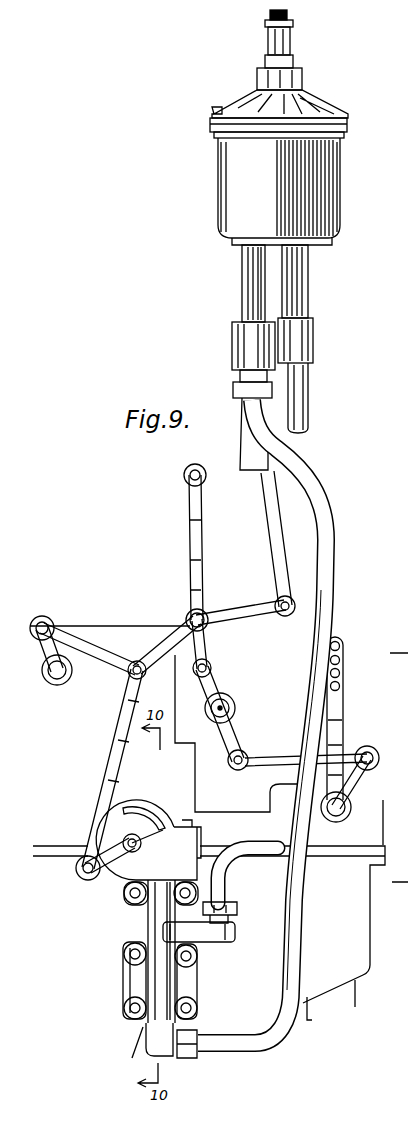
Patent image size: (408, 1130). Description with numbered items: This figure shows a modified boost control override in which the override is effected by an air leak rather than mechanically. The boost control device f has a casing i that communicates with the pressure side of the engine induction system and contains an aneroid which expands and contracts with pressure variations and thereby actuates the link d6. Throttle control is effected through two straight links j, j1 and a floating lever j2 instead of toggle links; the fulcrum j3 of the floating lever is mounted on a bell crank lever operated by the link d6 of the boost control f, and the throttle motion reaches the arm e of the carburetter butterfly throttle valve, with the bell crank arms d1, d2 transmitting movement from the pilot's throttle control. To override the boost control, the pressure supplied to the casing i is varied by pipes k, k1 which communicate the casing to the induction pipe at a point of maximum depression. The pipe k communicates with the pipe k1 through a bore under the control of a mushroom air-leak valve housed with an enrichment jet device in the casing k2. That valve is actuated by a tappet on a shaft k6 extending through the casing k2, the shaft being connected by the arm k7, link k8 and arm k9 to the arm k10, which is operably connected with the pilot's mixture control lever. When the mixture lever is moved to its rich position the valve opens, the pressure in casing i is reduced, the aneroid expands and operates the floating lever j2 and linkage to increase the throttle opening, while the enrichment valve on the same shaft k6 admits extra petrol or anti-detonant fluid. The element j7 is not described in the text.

The casing i is at (235, 178).
The boost control device f is at (239, 254).
The pipe k is at (323, 500).
The pipe k1 is at (262, 860).
The casing k2 is at (153, 975).
The shaft k6 is at (134, 840).
The arm k7 is at (108, 880).
The link k8 is at (117, 742).
The arm k9 is at (170, 637).
The arm k10 is at (190, 535).
The arm of bell crank lever d1 is at (345, 645).
The arm of bell crank lever d2 is at (352, 800).
The link d6 is at (277, 541).
The arm of carburetter butterfly throttle valve e is at (53, 636).
The straight link j is at (280, 758).
The straight link j1 is at (100, 640).
The floating lever j2 is at (238, 737).
The fulcrum of floating lever j3 is at (228, 702).
The arm j7 is at (223, 637).